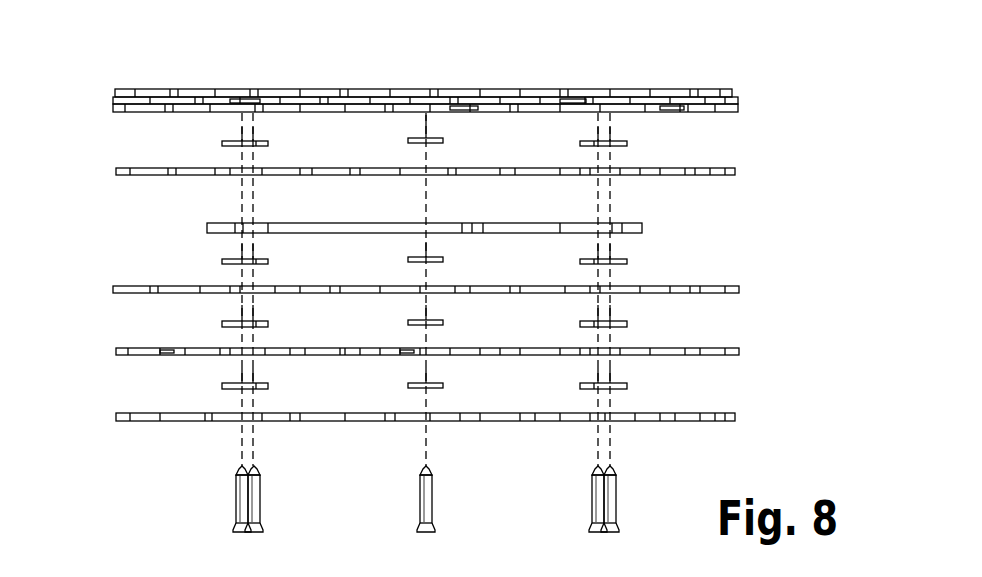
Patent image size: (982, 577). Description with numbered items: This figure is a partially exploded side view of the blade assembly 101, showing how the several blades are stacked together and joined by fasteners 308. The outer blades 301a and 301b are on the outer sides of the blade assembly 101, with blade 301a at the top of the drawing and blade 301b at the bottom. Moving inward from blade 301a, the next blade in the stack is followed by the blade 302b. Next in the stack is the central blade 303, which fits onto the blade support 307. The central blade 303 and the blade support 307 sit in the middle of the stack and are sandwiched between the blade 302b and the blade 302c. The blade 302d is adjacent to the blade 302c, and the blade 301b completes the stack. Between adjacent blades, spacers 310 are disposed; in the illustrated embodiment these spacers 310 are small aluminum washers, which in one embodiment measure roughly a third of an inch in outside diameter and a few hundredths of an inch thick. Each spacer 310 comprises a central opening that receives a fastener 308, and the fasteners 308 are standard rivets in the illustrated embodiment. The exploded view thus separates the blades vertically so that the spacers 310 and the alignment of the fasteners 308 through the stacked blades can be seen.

The blade assembly 101 is at (731, 60).
The blade 301a is at (118, 90).
The blade 301b is at (118, 413).
The blade 302b is at (113, 110).
The blade 302c is at (125, 287).
The blade 302d is at (738, 348).
The central blade 303 is at (735, 172).
The blade support 307 is at (642, 223).
The fastener 308 is at (262, 500).
The spacer 310 is at (224, 141).